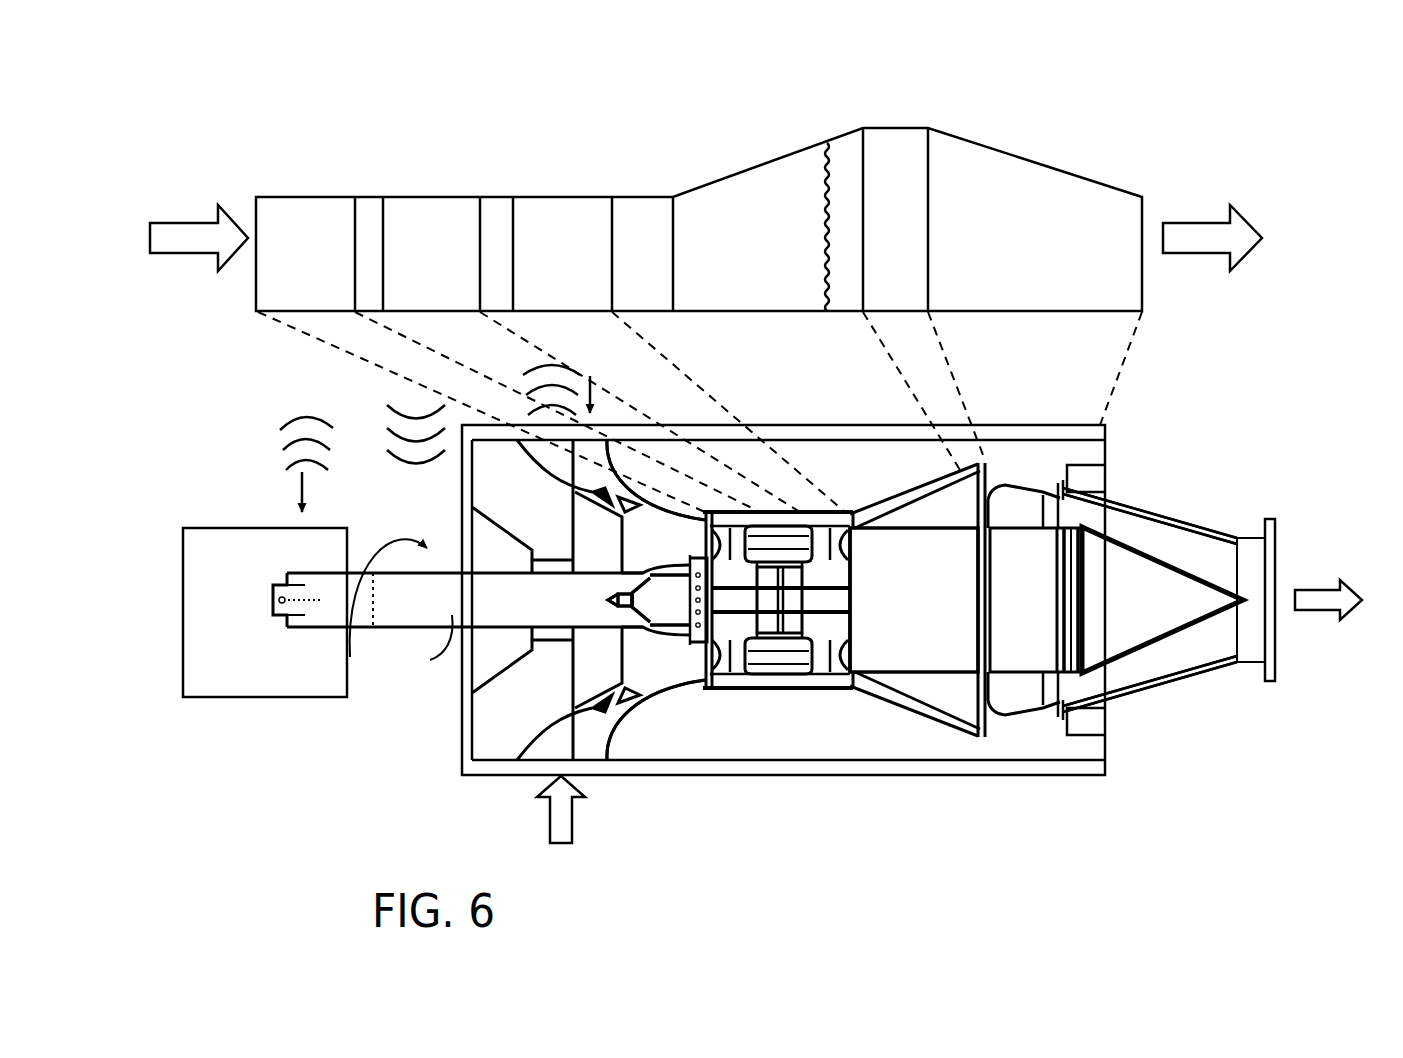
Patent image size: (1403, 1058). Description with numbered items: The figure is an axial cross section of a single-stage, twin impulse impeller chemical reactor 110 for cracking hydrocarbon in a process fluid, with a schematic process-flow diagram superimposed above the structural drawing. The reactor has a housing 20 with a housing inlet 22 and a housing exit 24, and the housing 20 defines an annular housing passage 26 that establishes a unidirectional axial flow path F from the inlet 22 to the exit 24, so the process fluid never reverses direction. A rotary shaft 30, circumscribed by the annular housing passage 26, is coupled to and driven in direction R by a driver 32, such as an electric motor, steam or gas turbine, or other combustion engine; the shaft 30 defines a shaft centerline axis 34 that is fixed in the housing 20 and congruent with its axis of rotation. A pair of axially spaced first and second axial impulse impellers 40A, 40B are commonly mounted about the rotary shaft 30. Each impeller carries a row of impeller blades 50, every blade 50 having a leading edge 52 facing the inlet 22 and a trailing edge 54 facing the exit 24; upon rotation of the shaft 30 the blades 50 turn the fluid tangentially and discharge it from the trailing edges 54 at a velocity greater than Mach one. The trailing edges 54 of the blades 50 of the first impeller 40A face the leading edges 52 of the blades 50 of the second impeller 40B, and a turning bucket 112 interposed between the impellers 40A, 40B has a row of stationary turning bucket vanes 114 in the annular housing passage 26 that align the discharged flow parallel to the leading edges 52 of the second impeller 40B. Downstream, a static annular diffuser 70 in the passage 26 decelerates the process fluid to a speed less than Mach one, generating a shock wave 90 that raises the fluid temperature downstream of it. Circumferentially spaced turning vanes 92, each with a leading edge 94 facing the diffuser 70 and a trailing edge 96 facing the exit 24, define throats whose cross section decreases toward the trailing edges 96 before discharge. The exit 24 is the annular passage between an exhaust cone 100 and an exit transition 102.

The housing 20 is at (975, 780).
The housing inlet 22 is at (245, 285).
The housing exit 24 is at (1146, 283).
The annular housing passage 26 is at (650, 500).
The rotary shaft 30 is at (455, 612).
The driver 32 is at (222, 700).
The shaft centerline axis 34 is at (355, 630).
The first axial impulse impeller 40A is at (300, 195).
The second axial impulse impeller 40B is at (585, 205).
The impeller blades 50 is at (262, 440).
The leading edge 52 is at (290, 458).
The trailing edge 54 is at (333, 465).
The static annular diffuser 70 is at (728, 178).
The shock wave 90 is at (830, 150).
The turning vanes 92 is at (1068, 170).
The turning vane leading edge 94 is at (922, 205).
The turning vane trailing edge 96 is at (1144, 213).
The exhaust cone 100 is at (1168, 598).
The exit transition 102 is at (1212, 680).
The chemical reactor 110 is at (1150, 380).
The turning bucket 112 is at (425, 205).
The turning bucket vanes 114 is at (410, 400).